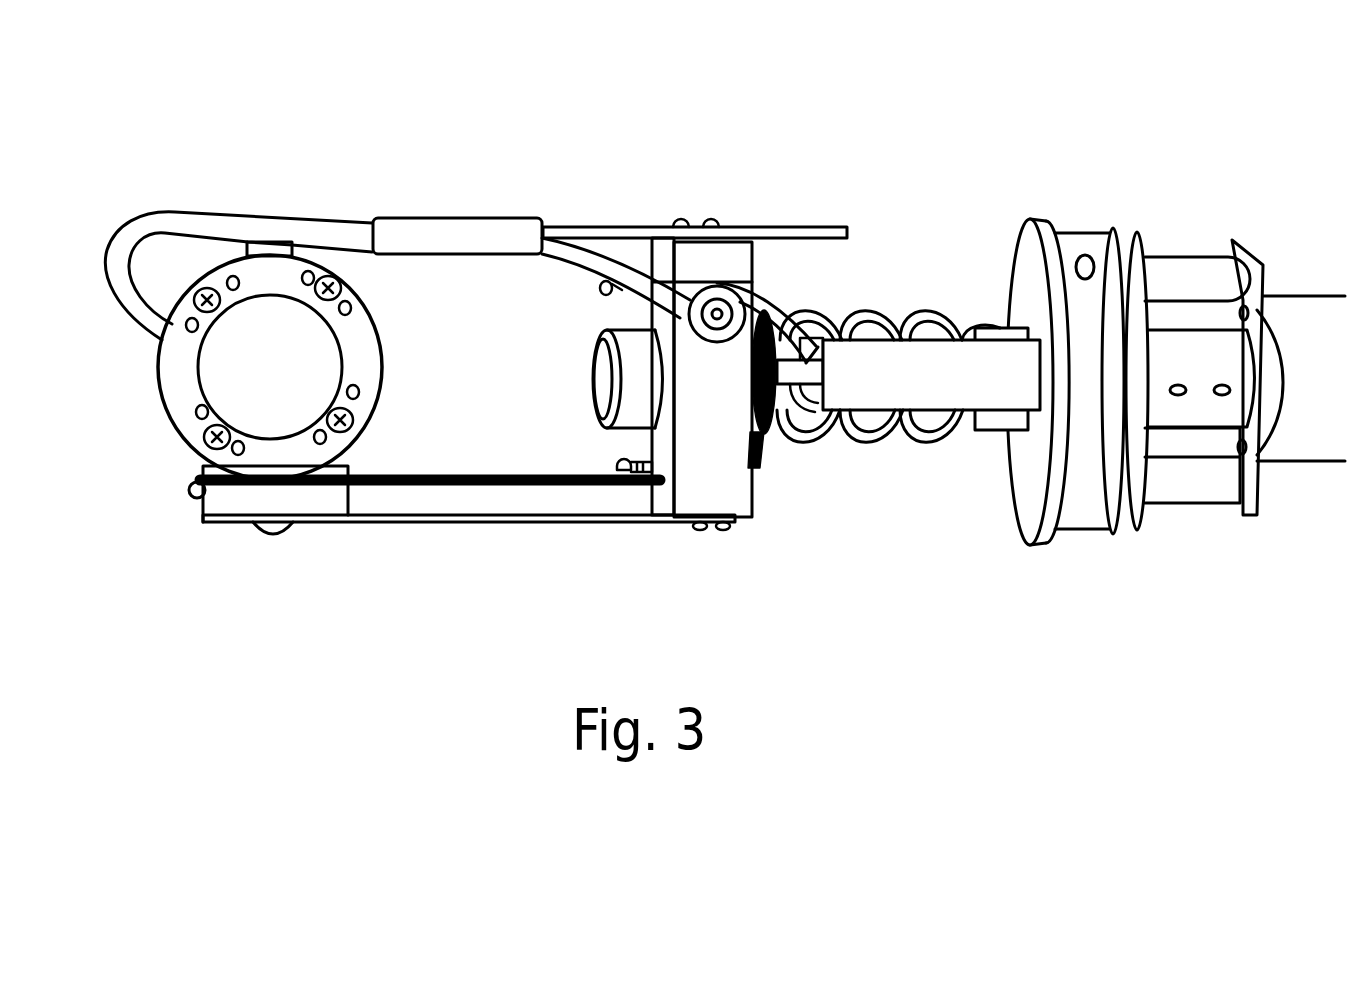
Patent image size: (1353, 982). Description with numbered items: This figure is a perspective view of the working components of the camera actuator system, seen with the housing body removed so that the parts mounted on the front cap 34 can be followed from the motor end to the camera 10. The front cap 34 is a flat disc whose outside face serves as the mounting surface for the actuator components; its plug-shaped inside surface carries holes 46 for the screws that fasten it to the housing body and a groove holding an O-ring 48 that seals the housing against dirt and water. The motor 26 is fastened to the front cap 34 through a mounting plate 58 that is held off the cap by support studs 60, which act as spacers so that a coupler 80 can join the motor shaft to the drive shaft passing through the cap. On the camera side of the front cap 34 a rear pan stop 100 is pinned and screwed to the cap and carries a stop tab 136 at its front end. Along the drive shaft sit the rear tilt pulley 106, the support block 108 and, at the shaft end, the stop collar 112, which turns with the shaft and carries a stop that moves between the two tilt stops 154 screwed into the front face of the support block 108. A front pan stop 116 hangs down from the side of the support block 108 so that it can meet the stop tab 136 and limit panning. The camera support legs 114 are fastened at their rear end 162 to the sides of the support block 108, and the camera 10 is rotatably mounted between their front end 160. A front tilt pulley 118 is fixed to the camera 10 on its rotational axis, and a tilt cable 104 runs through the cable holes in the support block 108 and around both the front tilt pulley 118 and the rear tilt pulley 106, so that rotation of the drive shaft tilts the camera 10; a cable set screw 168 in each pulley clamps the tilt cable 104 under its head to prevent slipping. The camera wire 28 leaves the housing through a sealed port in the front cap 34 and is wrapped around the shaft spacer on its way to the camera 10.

The camera 10 is at (172, 380).
The motor 26 is at (1322, 313).
The camera wire 28 is at (877, 310).
The front cap 34 is at (1053, 226).
The holes 46 is at (1088, 252).
The O-ring 48 is at (1107, 227).
The mounting plate 58 is at (1247, 250).
The support studs 60 is at (1190, 257).
The coupler 80 is at (1217, 367).
The rear pan stop 100 is at (905, 412).
The tilt cable 104 is at (765, 470).
The rear tilt pulley 106 is at (773, 440).
The support block 108 is at (722, 257).
The stop collar 112 is at (590, 358).
The camera support legs 114 is at (587, 225).
The front pan stop 116 is at (828, 226).
The front tilt pulley 118 is at (223, 502).
The stop tab 136 is at (803, 370).
The tilt stops 154 is at (601, 292).
The front end 160 is at (308, 525).
The rear end 162 is at (682, 527).
The cable set screw 168 is at (193, 487).